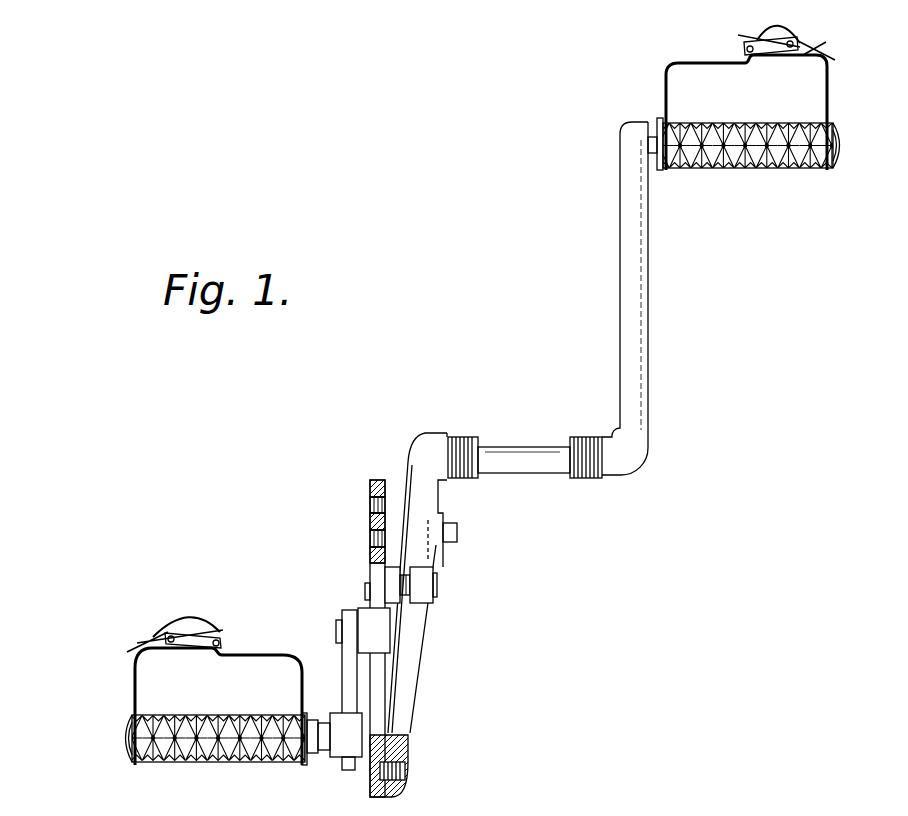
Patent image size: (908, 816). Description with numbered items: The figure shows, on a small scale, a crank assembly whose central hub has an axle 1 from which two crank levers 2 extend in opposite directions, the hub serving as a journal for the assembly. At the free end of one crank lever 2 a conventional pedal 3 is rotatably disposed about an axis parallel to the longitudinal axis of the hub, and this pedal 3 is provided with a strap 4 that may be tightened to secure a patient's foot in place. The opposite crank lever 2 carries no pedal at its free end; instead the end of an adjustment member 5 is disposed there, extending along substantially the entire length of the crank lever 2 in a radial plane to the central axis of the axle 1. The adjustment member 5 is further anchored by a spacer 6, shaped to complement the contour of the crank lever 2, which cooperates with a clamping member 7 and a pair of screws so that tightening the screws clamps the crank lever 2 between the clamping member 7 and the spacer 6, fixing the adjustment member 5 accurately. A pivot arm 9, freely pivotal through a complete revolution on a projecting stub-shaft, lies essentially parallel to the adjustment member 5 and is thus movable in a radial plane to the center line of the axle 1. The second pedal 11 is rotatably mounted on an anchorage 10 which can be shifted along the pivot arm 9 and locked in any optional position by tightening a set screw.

The axle 1 is at (535, 456).
The crank lever 2 is at (632, 278).
The pedal 3 is at (758, 153).
The strap 4 is at (828, 90).
The adjustment member 5 is at (380, 580).
The spacer 6 is at (393, 575).
The clamping member 7 is at (427, 585).
The pivot arm 9 is at (350, 613).
The anchorage 10 is at (333, 710).
The pedal 11 is at (127, 723).